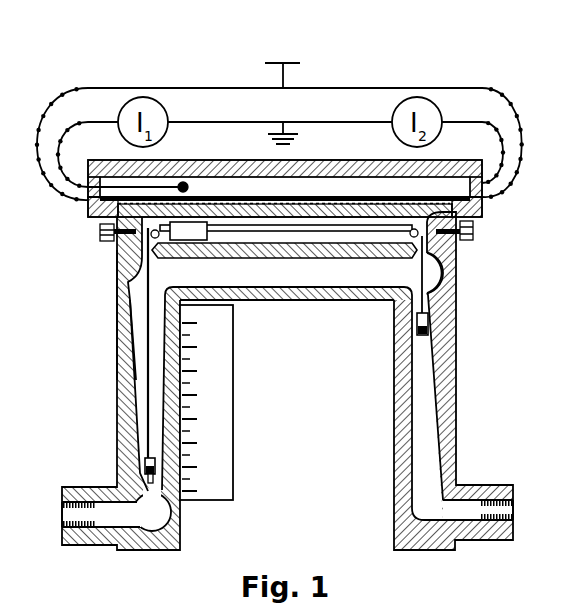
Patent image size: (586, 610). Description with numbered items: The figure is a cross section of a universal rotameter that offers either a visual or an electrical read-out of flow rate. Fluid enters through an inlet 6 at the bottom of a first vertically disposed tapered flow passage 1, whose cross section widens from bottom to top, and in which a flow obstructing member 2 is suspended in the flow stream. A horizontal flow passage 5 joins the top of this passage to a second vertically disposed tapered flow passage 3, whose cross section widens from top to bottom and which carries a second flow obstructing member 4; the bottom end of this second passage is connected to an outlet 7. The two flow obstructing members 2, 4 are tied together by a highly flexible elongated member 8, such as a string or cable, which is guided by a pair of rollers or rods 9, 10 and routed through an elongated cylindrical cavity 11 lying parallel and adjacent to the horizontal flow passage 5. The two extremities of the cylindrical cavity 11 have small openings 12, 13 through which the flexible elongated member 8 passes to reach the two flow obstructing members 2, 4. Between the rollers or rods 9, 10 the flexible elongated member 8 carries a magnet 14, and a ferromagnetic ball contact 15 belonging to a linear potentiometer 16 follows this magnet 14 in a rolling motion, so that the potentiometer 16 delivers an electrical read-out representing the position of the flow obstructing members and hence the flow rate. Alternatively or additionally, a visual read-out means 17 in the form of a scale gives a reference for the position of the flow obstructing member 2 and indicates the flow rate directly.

The first vertically disposed tapered flow passage 1 is at (120, 398).
The flow obstructing member 2 is at (125, 488).
The second vertically disposed tapered flow passage 3 is at (438, 400).
The flow obstructing member 4 is at (428, 336).
The horizontal flow passage 5 is at (305, 272).
The inlet 6 is at (73, 516).
The outlet 7 is at (503, 507).
The flexible elongated member 8 is at (118, 354).
The roller or rod 9 is at (100, 232).
The roller or rod 10 is at (470, 222).
The elongated cylindrical cavity 11 is at (358, 232).
The small opening 12 is at (145, 262).
The small opening 13 is at (432, 282).
The magnet 14 is at (210, 238).
The ferromagnetic ball contact 15 is at (188, 187).
The linear potentiometer 16 is at (345, 157).
The visual read-out means 17 is at (233, 438).